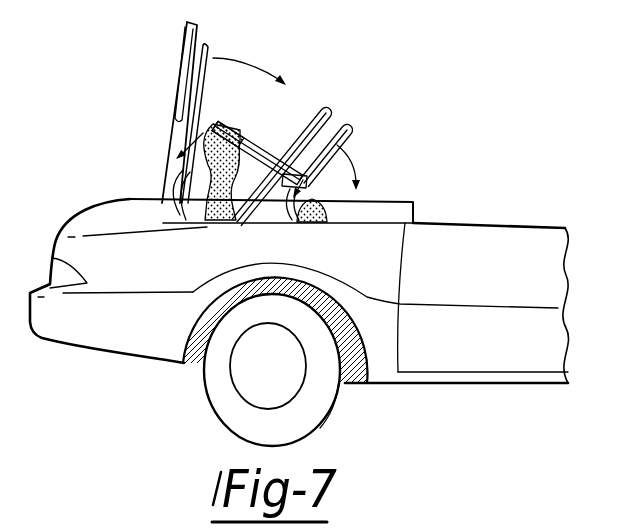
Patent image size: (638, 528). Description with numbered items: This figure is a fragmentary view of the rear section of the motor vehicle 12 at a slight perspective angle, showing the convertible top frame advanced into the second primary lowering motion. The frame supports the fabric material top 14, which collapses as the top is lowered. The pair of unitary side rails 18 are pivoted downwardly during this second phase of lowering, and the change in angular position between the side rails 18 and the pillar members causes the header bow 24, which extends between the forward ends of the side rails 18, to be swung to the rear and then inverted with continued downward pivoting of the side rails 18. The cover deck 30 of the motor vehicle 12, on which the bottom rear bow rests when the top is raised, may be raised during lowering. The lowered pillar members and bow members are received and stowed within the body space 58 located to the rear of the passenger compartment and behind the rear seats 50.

The motor vehicle 12 is at (137, 341).
The fabric material top 14 is at (213, 125).
The side rails 18 is at (354, 126).
The header bow 24 is at (243, 140).
The cover deck 30 is at (173, 71).
The rear seats 50 is at (328, 214).
The body space 58 is at (253, 226).